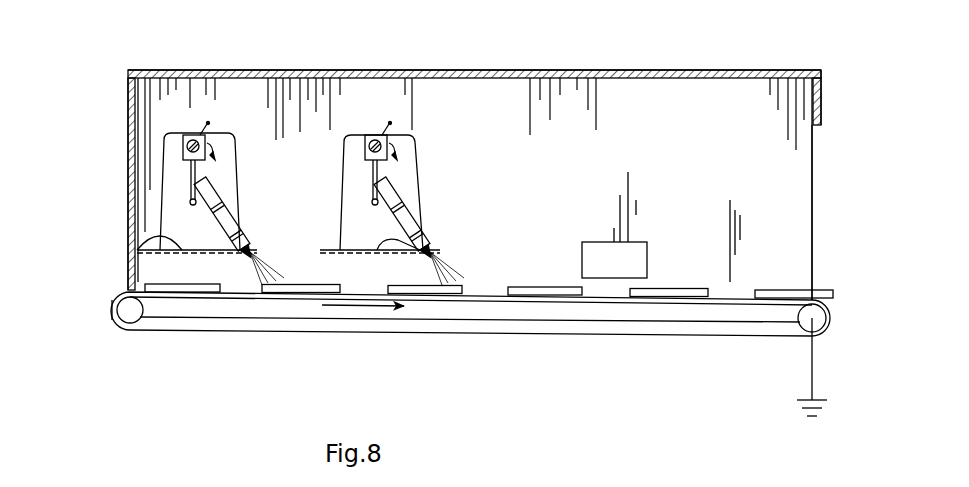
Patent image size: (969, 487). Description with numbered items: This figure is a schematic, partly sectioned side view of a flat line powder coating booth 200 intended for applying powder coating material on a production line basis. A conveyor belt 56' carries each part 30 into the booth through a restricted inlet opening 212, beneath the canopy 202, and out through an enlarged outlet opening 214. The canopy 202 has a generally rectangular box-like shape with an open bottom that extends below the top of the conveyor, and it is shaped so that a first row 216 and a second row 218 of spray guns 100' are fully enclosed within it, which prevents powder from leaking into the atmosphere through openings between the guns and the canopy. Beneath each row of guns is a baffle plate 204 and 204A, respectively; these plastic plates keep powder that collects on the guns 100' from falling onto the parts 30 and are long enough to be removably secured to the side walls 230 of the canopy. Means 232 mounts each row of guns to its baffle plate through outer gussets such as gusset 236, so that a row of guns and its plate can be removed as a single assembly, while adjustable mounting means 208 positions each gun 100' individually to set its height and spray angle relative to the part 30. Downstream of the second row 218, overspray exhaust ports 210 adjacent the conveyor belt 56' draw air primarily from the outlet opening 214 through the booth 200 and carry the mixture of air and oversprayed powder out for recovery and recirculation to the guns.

The powder coating booth 200 is at (283, 58).
The canopy 202 is at (188, 72).
The adjustable mounting means 208 is at (180, 120).
The first row of spray guns 216 is at (220, 118).
The second row of spray guns 218 is at (425, 128).
The means for mounting rows of guns to baffle plates 232 is at (152, 164).
The outer gusset 236 is at (170, 221).
The baffle plate 204 is at (185, 237).
The baffle plate 204A is at (430, 247).
The spray gun 100' is at (259, 204).
The exhaust port 210 is at (647, 262).
The side wall 230 is at (824, 193).
The outlet opening 214 is at (783, 237).
The inlet opening 212 is at (126, 286).
The conveyor belt 56' is at (470, 354).
The part 30 is at (186, 291).